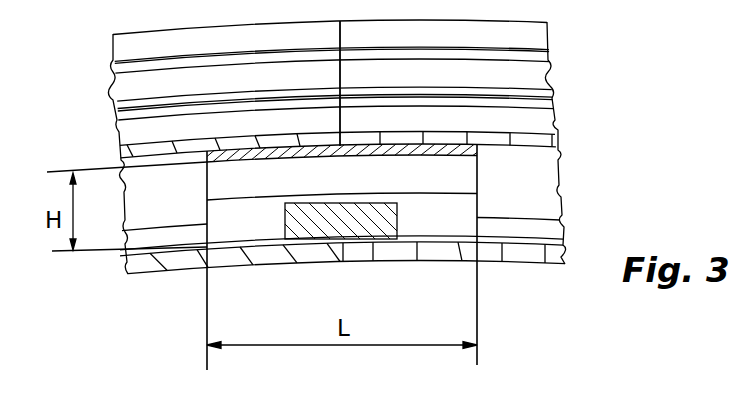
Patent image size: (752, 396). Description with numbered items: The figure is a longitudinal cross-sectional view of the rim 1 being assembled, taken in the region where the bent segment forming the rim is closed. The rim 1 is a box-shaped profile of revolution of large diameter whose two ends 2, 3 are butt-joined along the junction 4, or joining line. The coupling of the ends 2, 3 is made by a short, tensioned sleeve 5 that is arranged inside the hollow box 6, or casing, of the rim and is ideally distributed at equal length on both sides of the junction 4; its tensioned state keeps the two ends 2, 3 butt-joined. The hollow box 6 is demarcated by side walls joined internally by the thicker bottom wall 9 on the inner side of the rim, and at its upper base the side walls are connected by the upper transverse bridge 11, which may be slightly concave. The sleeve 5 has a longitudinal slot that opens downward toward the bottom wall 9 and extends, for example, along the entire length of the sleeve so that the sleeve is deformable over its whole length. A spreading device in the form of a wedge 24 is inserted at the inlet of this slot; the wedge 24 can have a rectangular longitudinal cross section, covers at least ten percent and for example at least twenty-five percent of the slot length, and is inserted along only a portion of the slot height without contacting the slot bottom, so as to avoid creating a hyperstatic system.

The rim 1 is at (633, 105).
The end 2 is at (225, 38).
The end 3 is at (447, 34).
The junction 4 is at (340, 78).
The sleeve 5 is at (462, 184).
The hollow box 6 is at (537, 210).
The bottom wall 9 is at (531, 258).
The upper transverse bridge 11 is at (531, 144).
The wedge 24 is at (330, 227).